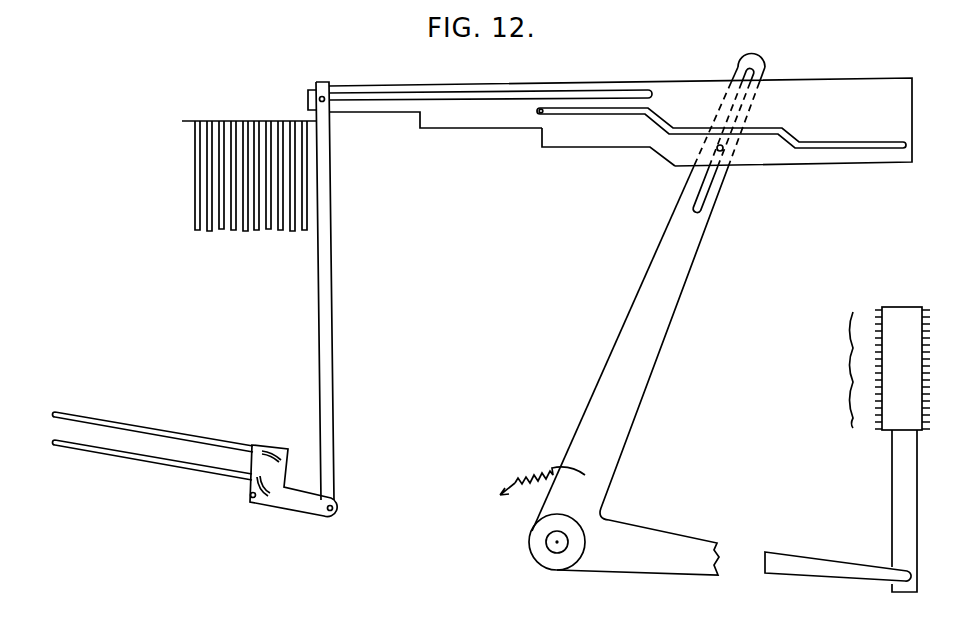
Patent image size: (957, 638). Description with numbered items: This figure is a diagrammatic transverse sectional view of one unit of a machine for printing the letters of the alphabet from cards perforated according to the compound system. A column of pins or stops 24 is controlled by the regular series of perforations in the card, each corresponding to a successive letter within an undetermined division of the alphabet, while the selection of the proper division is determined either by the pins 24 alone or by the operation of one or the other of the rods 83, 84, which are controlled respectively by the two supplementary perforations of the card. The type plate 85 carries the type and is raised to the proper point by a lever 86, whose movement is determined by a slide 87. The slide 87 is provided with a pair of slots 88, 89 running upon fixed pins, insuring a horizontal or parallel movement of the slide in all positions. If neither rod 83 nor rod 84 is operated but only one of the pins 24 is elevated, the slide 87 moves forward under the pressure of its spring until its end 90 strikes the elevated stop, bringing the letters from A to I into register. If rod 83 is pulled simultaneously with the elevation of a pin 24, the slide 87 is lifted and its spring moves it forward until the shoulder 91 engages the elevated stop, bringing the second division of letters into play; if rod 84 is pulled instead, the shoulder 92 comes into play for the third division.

The pins or stops 24 is at (193, 194).
The rod 83 is at (159, 432).
The rod 84 is at (162, 461).
The type plate 85 is at (893, 308).
The lever 86 is at (632, 315).
The slide 87 is at (620, 122).
The slot 88 is at (594, 95).
The slot 89 is at (621, 111).
The end 90 is at (308, 97).
The shoulder 91 is at (418, 122).
The shoulder 92 is at (540, 137).